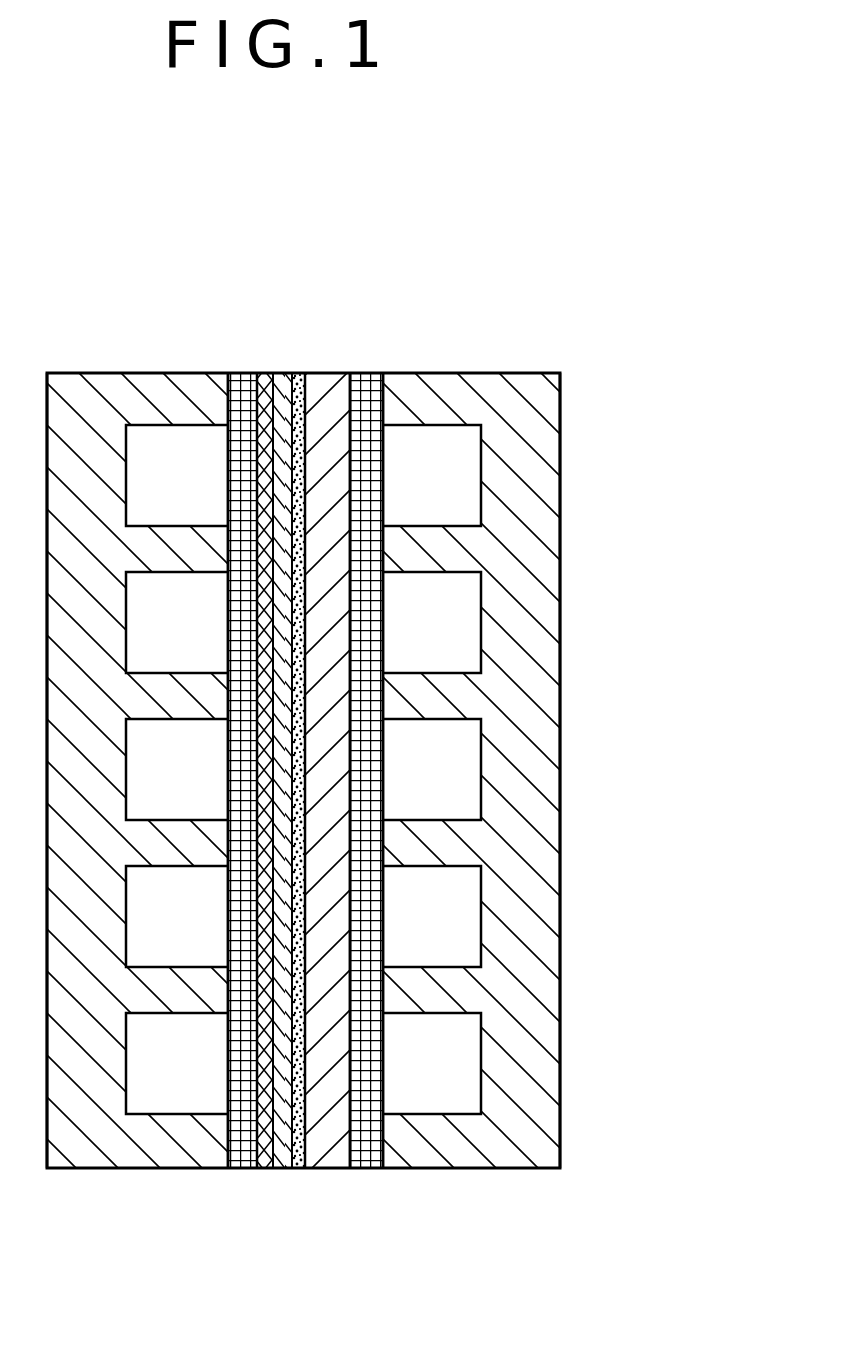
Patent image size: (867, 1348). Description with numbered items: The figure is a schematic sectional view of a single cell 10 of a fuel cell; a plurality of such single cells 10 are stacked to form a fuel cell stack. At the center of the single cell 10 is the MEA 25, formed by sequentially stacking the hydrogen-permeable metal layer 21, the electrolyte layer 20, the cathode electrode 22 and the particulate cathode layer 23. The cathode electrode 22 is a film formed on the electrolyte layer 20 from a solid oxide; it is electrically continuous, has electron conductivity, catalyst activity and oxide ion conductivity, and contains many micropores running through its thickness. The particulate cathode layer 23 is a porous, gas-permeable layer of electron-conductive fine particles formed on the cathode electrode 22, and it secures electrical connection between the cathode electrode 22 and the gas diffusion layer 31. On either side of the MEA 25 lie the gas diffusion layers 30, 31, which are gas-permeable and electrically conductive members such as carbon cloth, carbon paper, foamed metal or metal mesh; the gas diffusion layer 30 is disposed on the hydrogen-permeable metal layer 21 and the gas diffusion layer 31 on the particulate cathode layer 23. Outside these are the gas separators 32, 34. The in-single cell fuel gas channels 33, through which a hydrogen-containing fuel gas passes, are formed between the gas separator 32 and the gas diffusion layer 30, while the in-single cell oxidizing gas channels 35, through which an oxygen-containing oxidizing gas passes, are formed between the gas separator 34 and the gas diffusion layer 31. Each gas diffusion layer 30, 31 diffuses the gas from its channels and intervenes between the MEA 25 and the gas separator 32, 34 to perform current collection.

The single cell 10 is at (504, 286).
The electrolyte layer 20 is at (300, 372).
The hydrogen-permeable metal layer 21 is at (337, 372).
The cathode electrode 22 is at (278, 372).
The particulate cathode layer 23 is at (265, 372).
The MEA (Membrane Electrode Assembly) 25 is at (367, 272).
The gas diffusion layer 30 is at (365, 372).
The gas diffusion layer 31 is at (238, 372).
The gas separator 32 is at (467, 372).
The in-single cell fuel gas channels 33 is at (462, 950).
The gas separator 34 is at (128, 372).
The in-single cell oxidizing gas channels 35 is at (143, 950).